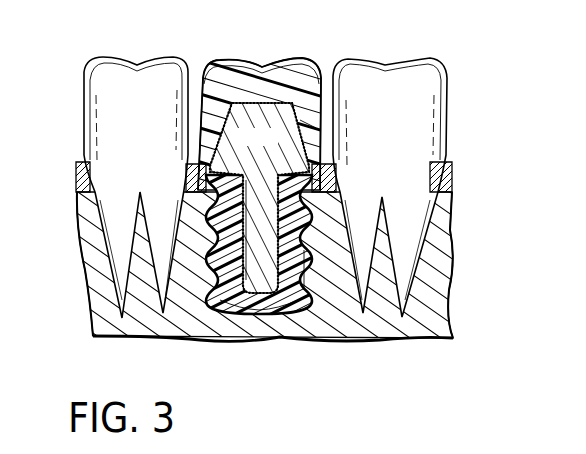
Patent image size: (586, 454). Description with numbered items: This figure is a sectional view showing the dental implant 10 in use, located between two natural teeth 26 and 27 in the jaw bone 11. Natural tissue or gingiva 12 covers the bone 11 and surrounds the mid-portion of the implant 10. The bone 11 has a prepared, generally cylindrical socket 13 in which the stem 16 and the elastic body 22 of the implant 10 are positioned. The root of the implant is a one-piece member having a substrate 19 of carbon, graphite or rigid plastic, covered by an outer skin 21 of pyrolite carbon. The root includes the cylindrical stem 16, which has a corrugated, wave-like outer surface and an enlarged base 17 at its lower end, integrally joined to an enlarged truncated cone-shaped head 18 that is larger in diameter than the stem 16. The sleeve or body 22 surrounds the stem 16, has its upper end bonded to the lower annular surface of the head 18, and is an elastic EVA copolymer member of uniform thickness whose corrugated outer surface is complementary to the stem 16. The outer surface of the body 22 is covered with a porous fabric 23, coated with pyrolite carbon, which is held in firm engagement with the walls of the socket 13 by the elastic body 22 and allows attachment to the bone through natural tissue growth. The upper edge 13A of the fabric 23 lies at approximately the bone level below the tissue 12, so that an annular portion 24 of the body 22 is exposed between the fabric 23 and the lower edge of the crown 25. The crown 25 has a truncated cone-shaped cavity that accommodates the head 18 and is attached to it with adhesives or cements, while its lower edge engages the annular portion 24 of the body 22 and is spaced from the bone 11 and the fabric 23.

The dental implant 10 is at (296, 44).
The jaw bone 11 is at (432, 275).
The gingiva 12 is at (446, 186).
The socket 13 is at (314, 300).
The upper edge of fabric 13A is at (323, 192).
The stem 16 is at (257, 218).
The base 17 is at (239, 305).
The head 18 is at (300, 126).
The substrate 19 is at (266, 200).
The outer skin 21 is at (262, 102).
The elastic body 22 is at (223, 293).
The porous fabric 23 is at (272, 310).
The annular portion 24 is at (312, 184).
The crown 25 is at (214, 64).
The tooth 26 is at (105, 82).
The tooth 27 is at (424, 92).